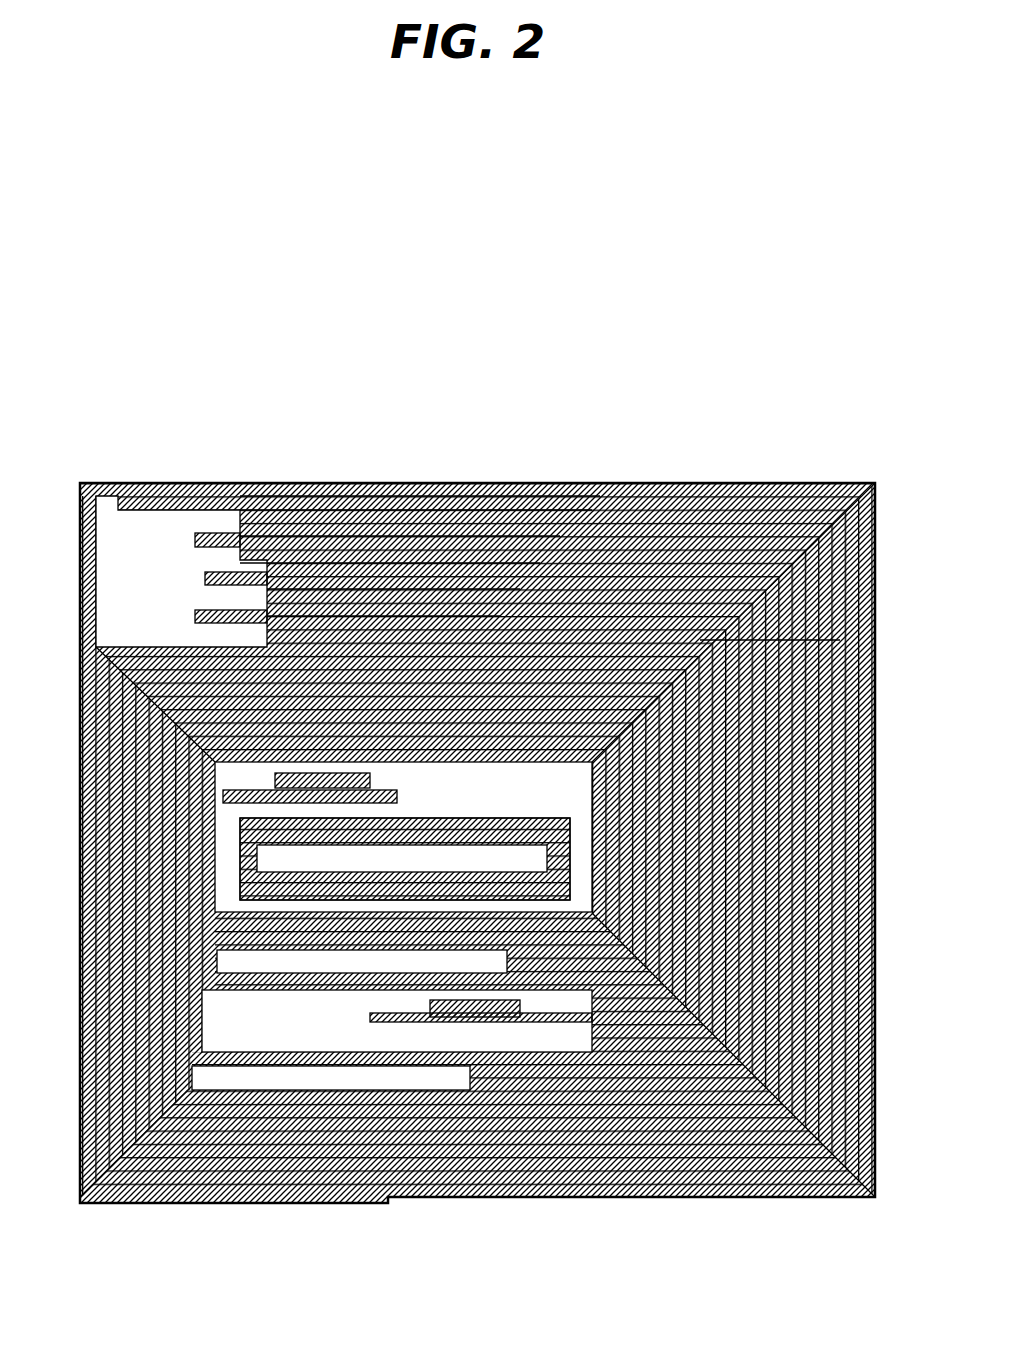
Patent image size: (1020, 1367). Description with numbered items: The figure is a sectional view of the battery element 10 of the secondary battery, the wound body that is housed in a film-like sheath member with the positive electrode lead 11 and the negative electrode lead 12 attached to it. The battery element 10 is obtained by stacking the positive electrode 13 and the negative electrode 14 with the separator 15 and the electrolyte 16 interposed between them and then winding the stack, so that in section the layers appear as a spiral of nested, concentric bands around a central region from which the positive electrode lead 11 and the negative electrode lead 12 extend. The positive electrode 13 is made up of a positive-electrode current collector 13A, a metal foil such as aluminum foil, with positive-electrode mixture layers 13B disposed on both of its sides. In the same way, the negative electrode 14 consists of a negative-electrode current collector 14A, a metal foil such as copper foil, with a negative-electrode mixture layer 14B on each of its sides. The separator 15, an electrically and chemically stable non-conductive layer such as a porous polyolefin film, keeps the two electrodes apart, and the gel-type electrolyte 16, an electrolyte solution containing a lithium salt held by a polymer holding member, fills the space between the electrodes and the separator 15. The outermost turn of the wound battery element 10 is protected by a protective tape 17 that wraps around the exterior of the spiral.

The battery element 10 is at (706, 283).
The positive electrode lead 11 is at (297, 780).
The negative electrode lead 12 is at (465, 1008).
The positive electrode 13 is at (343, 358).
The positive-electrode current collector 13A is at (218, 533).
The positive-electrode mixture layer 13B is at (303, 640).
The negative electrode 14 is at (605, 358).
The negative-electrode current collector 14A is at (420, 505).
The negative-electrode mixture layer 14B is at (550, 650).
The separator 15 is at (715, 620).
The electrolyte 16 is at (652, 600).
The protective tape 17 is at (832, 488).